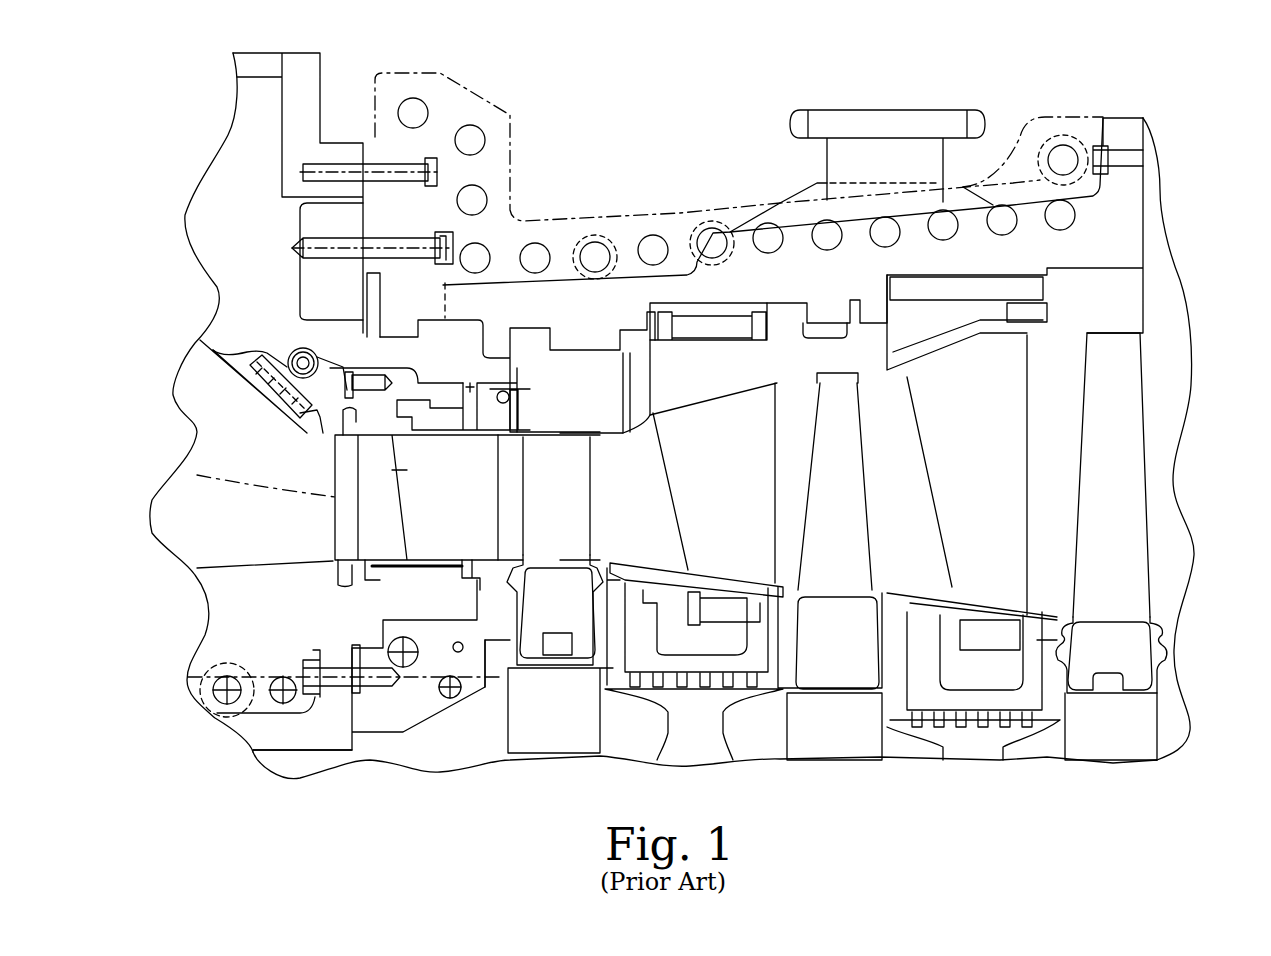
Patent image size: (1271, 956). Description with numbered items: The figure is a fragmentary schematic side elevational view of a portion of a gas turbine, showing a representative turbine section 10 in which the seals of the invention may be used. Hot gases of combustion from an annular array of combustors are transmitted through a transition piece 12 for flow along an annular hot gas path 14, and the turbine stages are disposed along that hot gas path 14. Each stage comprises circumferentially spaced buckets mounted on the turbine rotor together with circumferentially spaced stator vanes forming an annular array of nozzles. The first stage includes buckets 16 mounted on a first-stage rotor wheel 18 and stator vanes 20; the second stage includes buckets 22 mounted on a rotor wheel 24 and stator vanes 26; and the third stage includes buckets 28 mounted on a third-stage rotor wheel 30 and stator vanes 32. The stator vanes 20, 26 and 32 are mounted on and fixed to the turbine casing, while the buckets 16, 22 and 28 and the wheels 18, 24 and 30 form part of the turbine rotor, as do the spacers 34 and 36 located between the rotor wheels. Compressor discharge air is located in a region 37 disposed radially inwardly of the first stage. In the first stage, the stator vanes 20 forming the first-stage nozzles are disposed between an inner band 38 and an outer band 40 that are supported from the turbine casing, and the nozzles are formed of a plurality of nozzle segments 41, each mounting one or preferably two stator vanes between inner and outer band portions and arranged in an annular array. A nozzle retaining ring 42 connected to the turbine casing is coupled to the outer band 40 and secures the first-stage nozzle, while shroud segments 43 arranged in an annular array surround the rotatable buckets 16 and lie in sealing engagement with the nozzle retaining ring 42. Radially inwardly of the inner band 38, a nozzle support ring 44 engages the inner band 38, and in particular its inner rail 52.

The turbine section 10 is at (590, 148).
The transition piece 12 is at (210, 417).
The hot gas path 14 is at (622, 437).
The buckets 16 is at (583, 467).
The first-stage rotor wheel 18 is at (540, 737).
The stator vanes 20 is at (436, 470).
The buckets 22 is at (857, 477).
The rotor wheel 24 is at (835, 745).
The stator vanes 26 is at (733, 457).
The buckets 28 is at (1140, 473).
The third-stage rotor wheel 30 is at (1113, 752).
The stator vanes 32 is at (992, 452).
The spacer 34 is at (697, 745).
The spacer 36 is at (975, 753).
The region 37 is at (322, 629).
The inner band 38 is at (437, 560).
The outer band 40 is at (460, 437).
The nozzle segments 41 is at (393, 473).
The nozzle retaining ring 42 is at (400, 370).
The shroud segments 43 is at (580, 404).
The nozzle support ring 44 is at (385, 722).
The inner rail 52 is at (463, 580).